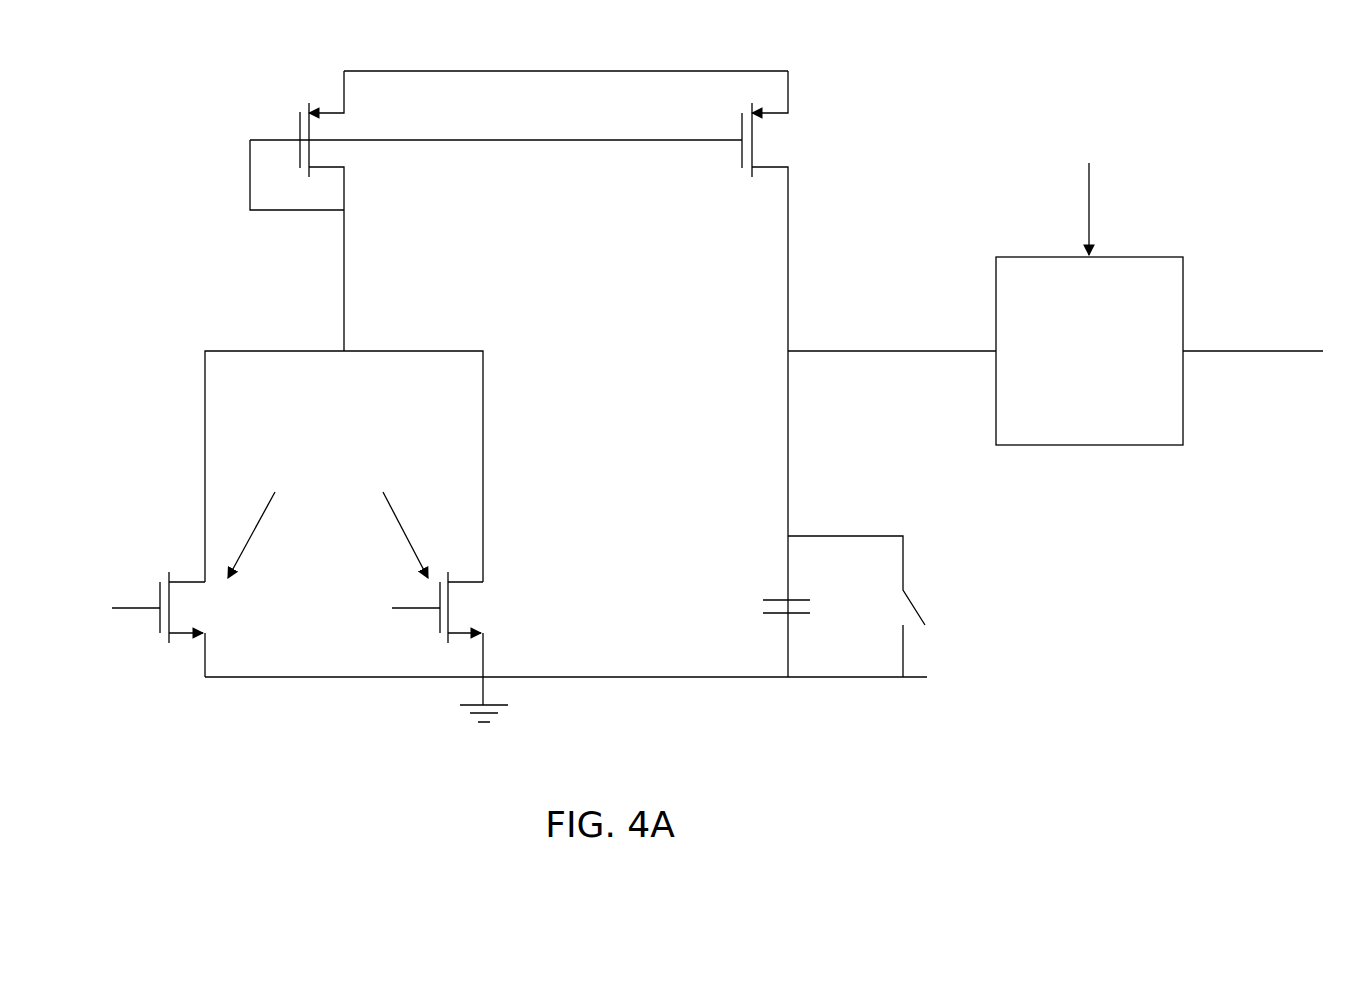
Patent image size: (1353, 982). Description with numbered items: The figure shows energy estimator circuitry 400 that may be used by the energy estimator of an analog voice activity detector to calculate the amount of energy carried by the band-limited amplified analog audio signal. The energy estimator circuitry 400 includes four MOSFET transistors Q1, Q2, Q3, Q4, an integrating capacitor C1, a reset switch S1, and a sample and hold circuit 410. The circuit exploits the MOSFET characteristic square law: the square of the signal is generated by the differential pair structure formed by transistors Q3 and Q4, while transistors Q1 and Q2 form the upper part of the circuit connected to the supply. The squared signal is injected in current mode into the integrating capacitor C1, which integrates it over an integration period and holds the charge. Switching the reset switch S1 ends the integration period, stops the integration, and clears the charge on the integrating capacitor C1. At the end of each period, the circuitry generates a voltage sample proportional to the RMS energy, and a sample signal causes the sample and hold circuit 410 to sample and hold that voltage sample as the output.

The energy estimator circuitry 400 is at (866, 804).
The sample and hold circuit 410 is at (1165, 284).
The MOSFET transistor Q1 is at (297, 211).
The MOSFET transistor Q2 is at (790, 374).
The MOSFET transistor Q3 is at (137, 604).
The MOSFET transistor Q4 is at (435, 624).
The integrating capacitor C1 is at (707, 588).
The reset switch S1 is at (887, 606).